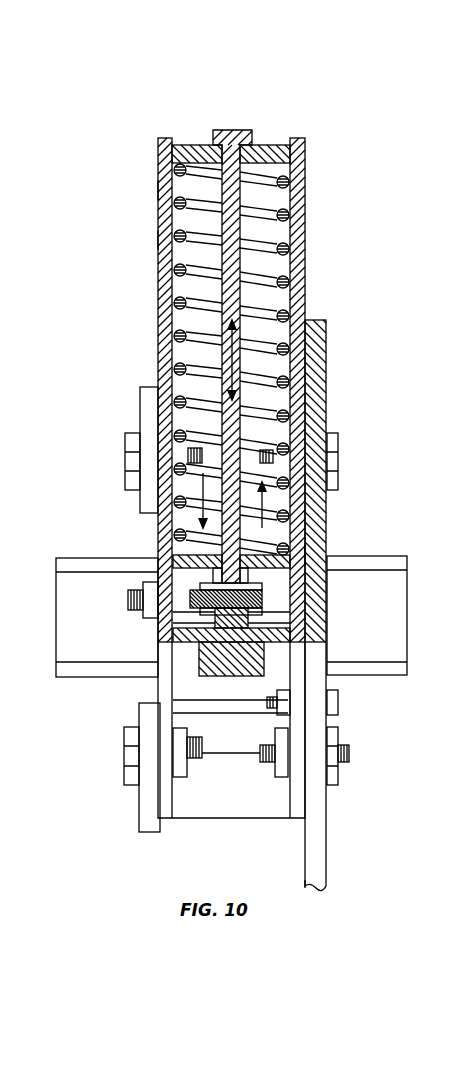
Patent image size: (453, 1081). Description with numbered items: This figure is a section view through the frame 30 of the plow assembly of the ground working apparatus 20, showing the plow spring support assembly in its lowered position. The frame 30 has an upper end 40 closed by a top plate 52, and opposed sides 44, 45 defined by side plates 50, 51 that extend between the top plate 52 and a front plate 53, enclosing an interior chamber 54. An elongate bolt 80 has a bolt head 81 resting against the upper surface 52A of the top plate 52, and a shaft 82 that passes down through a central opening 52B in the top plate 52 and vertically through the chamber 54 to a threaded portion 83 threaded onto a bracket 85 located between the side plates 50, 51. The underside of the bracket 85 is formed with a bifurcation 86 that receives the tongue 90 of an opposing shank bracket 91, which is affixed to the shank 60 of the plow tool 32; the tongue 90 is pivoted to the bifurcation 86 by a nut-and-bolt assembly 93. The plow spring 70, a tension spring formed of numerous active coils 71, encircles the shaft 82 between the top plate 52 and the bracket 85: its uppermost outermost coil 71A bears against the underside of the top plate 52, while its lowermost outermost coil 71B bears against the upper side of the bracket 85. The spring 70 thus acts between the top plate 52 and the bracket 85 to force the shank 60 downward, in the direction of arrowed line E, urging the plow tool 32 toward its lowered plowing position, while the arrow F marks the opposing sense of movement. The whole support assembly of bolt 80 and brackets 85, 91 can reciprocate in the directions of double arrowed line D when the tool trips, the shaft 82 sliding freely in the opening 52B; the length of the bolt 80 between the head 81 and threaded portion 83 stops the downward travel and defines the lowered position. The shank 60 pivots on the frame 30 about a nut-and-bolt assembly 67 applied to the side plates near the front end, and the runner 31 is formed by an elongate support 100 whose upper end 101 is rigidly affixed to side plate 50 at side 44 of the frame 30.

The ground working apparatus 20 is at (84, 211).
The frame 30 is at (158, 141).
The runner 31 is at (327, 880).
The plow tool 32 is at (265, 665).
The upper end 40 is at (300, 139).
The side 44 is at (289, 280).
The side 45 is at (158, 240).
The side plate 50 is at (300, 250).
The side plate 51 is at (166, 185).
The top plate 52 is at (196, 158).
The upper surface 52A is at (182, 146).
The central opening 52B is at (246, 150).
The front plate 53 is at (184, 283).
The chamber 54 is at (300, 222).
The shank 60 is at (226, 668).
The nut-and-bolt assembly 67 is at (128, 600).
The plow spring 70 is at (178, 242).
The active coils 71 is at (312, 318).
The outermost coil 71A is at (293, 160).
The outermost coil 71B is at (288, 562).
The bolt 80 is at (216, 374).
The bolt head 81 is at (236, 130).
The shaft 82 is at (285, 211).
The threaded portion 83 is at (218, 560).
The bracket 85 is at (312, 558).
The bifurcation 86 is at (250, 580).
The tongue 90 is at (258, 620).
The shank bracket 91 is at (180, 636).
The nut-and-bolt assembly 93 is at (171, 593).
The elongate support 100 is at (318, 853).
The upper end 101 is at (327, 362).
The double arrowed line D is at (220, 358).
The arrowed line E is at (201, 498).
The direction of spring movement F is at (264, 500).